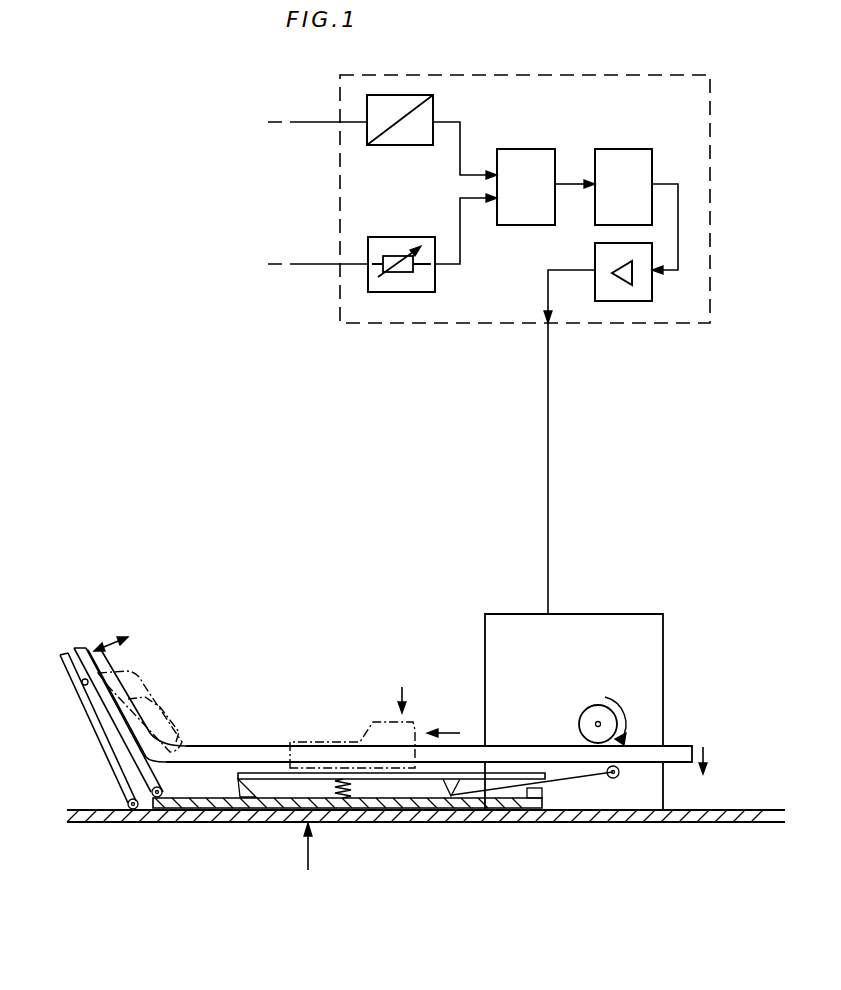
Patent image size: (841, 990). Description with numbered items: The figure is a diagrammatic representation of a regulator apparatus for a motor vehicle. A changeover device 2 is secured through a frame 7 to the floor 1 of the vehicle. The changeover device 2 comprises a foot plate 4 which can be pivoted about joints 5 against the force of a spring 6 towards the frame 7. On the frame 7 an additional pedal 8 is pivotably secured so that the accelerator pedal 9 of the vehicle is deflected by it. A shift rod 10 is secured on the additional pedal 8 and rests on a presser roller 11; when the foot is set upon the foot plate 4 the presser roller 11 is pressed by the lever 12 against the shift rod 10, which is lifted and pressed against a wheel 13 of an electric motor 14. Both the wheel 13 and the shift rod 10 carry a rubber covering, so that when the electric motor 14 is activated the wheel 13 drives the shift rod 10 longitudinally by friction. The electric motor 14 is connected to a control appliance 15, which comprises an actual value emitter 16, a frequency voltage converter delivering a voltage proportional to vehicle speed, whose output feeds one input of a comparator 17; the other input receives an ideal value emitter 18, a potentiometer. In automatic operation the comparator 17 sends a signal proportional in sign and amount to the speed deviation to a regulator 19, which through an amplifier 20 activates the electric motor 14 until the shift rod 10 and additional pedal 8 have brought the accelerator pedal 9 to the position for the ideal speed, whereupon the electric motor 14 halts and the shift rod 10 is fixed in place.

The floor 1 is at (728, 822).
The changeover device 2 is at (306, 862).
The foot plate 4 is at (538, 771).
The joints 5 is at (229, 783).
The spring 6 is at (350, 790).
The frame 7 is at (196, 808).
The additional pedal 8 is at (78, 648).
The accelerator pedal 9 is at (60, 657).
The shift rod 10 is at (232, 746).
The presser roller 11 is at (619, 777).
The lever 12 is at (557, 787).
The wheel 13 is at (591, 706).
The electric motor 14 is at (664, 695).
The control appliance 15 is at (710, 190).
The actual value emitter 16 is at (434, 98).
The comparator 17 is at (534, 149).
The ideal value emitter 18 is at (435, 280).
The regulator 19 is at (628, 149).
The amplifier 20 is at (652, 295).